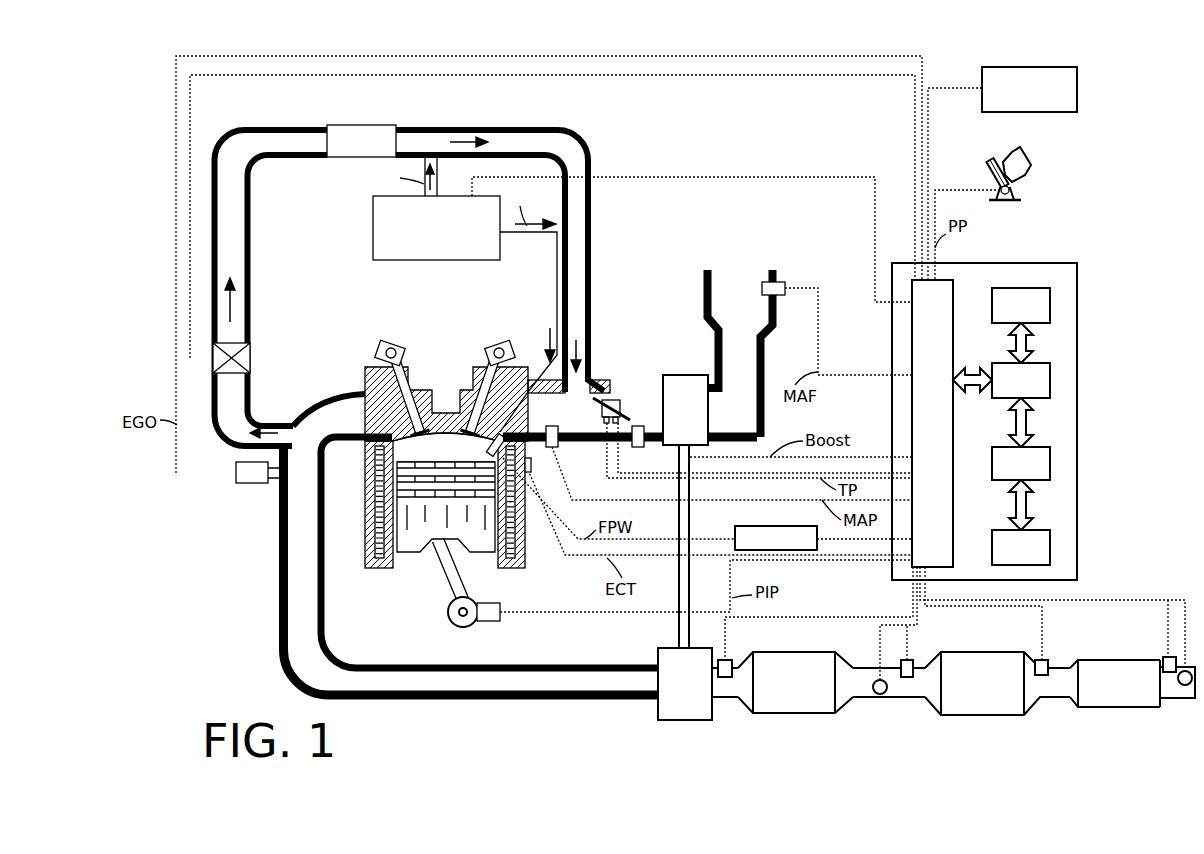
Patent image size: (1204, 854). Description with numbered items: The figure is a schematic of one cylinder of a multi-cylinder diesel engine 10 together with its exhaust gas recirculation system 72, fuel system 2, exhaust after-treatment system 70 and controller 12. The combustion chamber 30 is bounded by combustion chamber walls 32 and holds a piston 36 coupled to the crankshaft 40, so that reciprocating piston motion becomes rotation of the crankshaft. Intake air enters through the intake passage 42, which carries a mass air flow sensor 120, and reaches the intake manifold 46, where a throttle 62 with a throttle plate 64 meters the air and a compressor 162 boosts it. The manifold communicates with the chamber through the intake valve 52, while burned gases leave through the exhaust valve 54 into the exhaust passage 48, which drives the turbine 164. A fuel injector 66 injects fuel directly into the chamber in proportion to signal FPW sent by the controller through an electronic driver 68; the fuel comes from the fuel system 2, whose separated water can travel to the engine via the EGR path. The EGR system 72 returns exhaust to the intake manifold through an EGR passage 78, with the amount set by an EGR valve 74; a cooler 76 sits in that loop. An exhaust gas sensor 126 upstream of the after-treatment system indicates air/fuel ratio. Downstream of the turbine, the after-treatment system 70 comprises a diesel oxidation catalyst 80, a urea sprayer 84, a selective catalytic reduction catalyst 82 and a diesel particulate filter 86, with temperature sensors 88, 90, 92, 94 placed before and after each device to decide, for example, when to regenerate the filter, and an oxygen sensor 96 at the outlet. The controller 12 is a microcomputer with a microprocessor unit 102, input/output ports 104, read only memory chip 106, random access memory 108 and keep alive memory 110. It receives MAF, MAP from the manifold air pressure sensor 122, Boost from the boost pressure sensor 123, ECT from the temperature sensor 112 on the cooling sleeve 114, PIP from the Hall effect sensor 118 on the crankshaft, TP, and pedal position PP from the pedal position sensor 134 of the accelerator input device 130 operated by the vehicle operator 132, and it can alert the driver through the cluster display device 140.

The fuel system 2 is at (456, 295).
The engine 10 is at (388, 308).
The controller 12 is at (1020, 411).
The combustion chamber 30 is at (445, 447).
The combustion chamber walls 32 is at (398, 558).
The piston 36 is at (432, 530).
The crankshaft 40 is at (450, 630).
The intake passage 42 is at (750, 310).
The intake manifold 46 is at (576, 418).
The exhaust passage 48 is at (350, 418).
The intake valve 52 is at (470, 415).
The exhaust valve 54 is at (408, 425).
The throttle 62 is at (613, 398).
The throttle plate 64 is at (594, 396).
The fuel injector 66 is at (498, 436).
The electronic driver 68 is at (748, 515).
The exhaust after-treatment system 70 is at (953, 707).
The exhaust gas recirculation system 72 is at (207, 292).
The EGR valve 74 is at (213, 368).
The EGR cooler 76 is at (361, 141).
The EGR passage 78 is at (548, 127).
The diesel oxidation catalyst 80 is at (795, 682).
The selective catalytic reduction catalyst 82 is at (997, 683).
The urea sprayer 84 is at (886, 681).
The diesel particulate filter 86 is at (1115, 683).
The temperature sensor 88 is at (732, 661).
The temperature sensor 90 is at (913, 661).
The temperature sensor 92 is at (1036, 661).
The temperature sensor 94 is at (1166, 657).
The oxygen sensor 96 is at (1180, 688).
The microprocessor unit 102 is at (1052, 372).
The input/output ports 104 is at (957, 290).
The read only memory chip 106 is at (1052, 302).
The random access memory 108 is at (1052, 456).
The keep alive memory 110 is at (1052, 540).
The temperature sensor 112 is at (528, 472).
The cooling sleeve 114 is at (522, 548).
The Hall effect sensor 118 is at (500, 620).
The mass air flow sensor 120 is at (782, 283).
The manifold air pressure sensor 122 is at (552, 450).
The boost pressure sensor 123 is at (643, 449).
The exhaust gas sensor 126 is at (236, 463).
The input device 130 is at (990, 172).
The vehicle operator 132 is at (1032, 160).
The pedal position sensor 134 is at (1016, 192).
The cluster display device 140 is at (1029, 89).
The compressor 162 is at (668, 375).
The turbine 164 is at (658, 712).